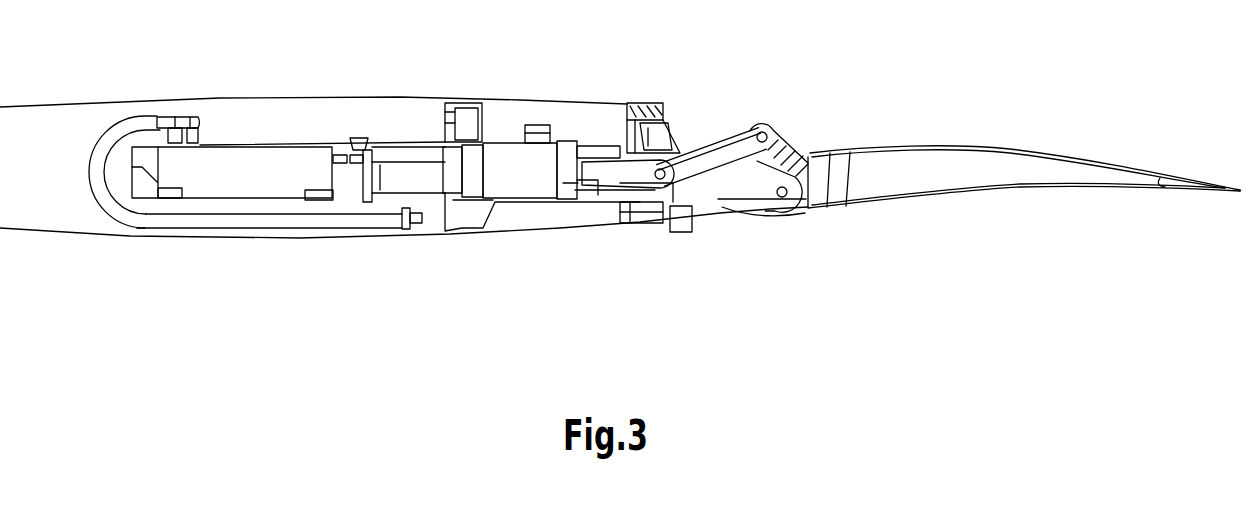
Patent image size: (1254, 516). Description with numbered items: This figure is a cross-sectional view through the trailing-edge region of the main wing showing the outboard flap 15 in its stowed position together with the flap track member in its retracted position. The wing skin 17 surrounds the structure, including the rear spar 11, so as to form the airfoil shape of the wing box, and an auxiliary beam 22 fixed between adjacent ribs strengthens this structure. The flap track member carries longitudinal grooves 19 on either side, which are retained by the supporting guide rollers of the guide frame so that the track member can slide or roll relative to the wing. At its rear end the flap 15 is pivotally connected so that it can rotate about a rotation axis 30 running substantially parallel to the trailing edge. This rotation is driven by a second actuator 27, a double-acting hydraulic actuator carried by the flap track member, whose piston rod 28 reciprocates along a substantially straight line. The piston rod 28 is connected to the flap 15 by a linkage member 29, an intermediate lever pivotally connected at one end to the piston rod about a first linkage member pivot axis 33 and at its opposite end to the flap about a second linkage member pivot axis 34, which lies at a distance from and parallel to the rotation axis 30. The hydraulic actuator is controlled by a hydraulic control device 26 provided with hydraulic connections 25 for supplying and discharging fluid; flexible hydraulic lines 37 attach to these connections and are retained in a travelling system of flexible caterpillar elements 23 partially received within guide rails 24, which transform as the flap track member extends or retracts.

The rear spar 11 is at (643, 104).
The outboard flap 15 is at (915, 165).
The wing skin 17 is at (278, 238).
The longitudinal grooves 19 is at (623, 192).
The auxiliary beam 22 is at (452, 103).
The flexible caterpillar elements 23 is at (93, 177).
The guide rails 24 is at (197, 228).
The hydraulic connections 25 is at (188, 117).
The hydraulic control device 26 is at (242, 167).
The second actuator 27 is at (522, 178).
The piston rod 28 is at (598, 168).
The linkage member 29 is at (710, 142).
The rotation axis 30 is at (782, 197).
The first linkage member pivot axis 33 is at (655, 172).
The second linkage member pivot axis 34 is at (763, 130).
The flexible hydraulic lines 37 is at (166, 117).